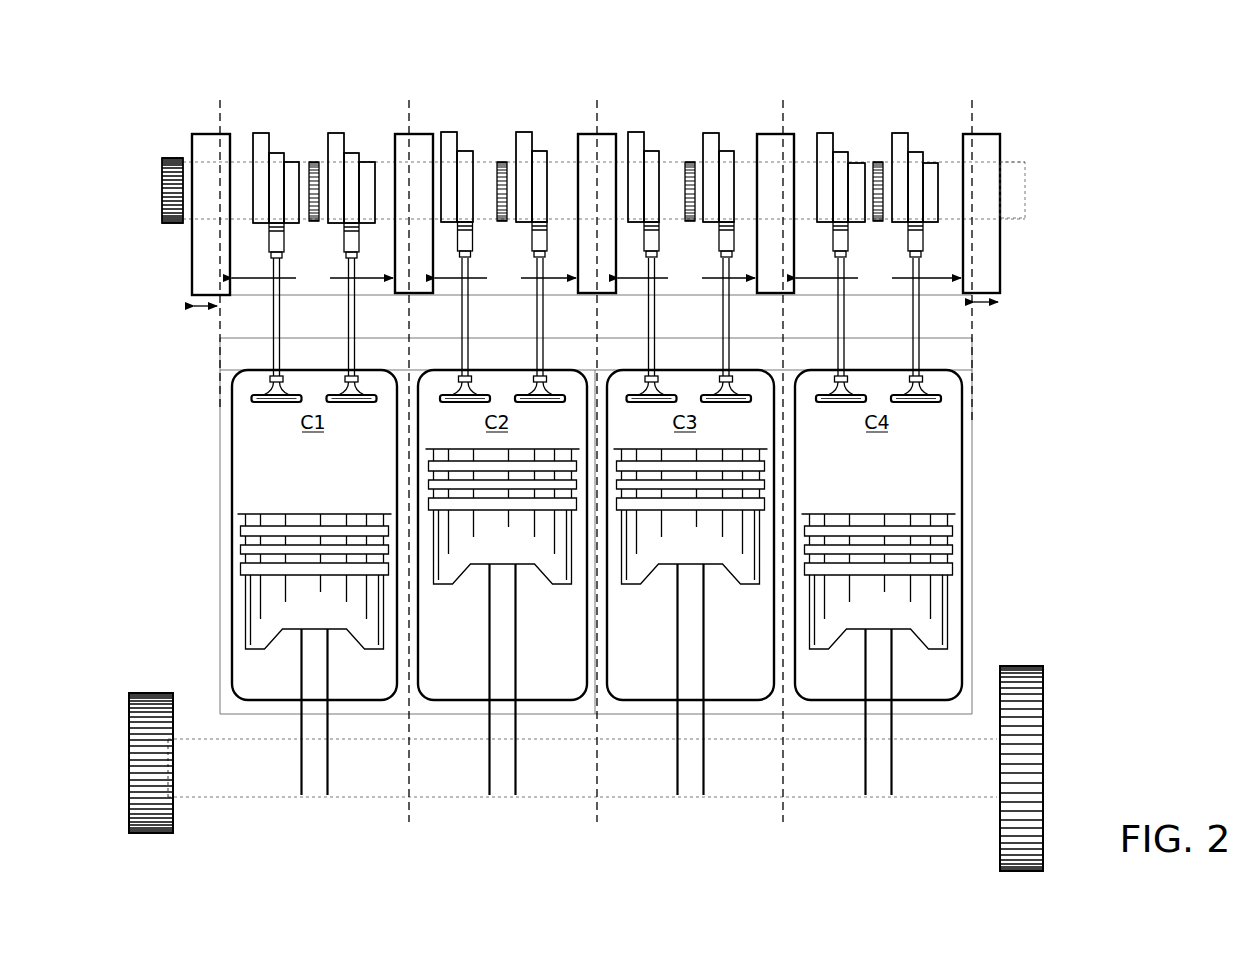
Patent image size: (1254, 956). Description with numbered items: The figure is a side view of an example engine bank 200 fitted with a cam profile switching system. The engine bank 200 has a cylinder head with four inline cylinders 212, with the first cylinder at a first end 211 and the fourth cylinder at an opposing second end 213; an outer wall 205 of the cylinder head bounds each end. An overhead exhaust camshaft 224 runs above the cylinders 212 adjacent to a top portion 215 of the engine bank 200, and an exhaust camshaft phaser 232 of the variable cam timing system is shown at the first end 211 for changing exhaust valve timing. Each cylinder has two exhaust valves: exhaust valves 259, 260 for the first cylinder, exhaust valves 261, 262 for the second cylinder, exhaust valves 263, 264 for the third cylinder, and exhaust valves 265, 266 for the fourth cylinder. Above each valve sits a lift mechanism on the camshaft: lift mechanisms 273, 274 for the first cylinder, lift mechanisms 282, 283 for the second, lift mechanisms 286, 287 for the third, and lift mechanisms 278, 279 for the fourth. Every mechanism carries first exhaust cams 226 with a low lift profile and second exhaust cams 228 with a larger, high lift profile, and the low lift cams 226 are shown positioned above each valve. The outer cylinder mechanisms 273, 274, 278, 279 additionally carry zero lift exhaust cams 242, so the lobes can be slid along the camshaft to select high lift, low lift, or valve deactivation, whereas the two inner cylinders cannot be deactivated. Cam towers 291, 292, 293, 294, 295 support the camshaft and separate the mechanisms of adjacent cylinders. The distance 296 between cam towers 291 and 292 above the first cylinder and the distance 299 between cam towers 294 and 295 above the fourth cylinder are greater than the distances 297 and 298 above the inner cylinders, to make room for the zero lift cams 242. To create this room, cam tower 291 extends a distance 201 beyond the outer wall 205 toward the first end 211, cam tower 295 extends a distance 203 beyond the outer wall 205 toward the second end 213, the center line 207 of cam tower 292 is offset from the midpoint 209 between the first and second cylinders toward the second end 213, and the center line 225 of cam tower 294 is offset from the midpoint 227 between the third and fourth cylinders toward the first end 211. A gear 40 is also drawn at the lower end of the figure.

The engine bank 200 is at (1085, 170).
The distance 201 is at (217, 310).
The distance 203 is at (983, 310).
The outer wall 205 is at (219, 350).
The center line 207 is at (417, 202).
The midpoint 209 is at (408, 803).
The first end 211 is at (142, 252).
The cylinders 212 is at (235, 458).
The second end 213 is at (1027, 243).
The top portion 215 is at (577, 75).
The exhaust camshaft 224 is at (1015, 160).
The center line 225 is at (777, 192).
The first exhaust cams 226 is at (916, 167).
The midpoint 227 is at (783, 807).
The second exhaust cams 228 is at (903, 140).
The exhaust camshaft phaser 232 is at (170, 156).
The zero lift exhaust cams 242 is at (929, 180).
The exhaust valve 259 is at (273, 302).
The exhaust valve 260 is at (348, 302).
The exhaust valve 261 is at (461, 302).
The exhaust valve 262 is at (536, 302).
The exhaust valve 263 is at (648, 302).
The exhaust valve 264 is at (722, 302).
The exhaust valve 265 is at (837, 302).
The exhaust valve 266 is at (912, 302).
The lift mechanism 273 is at (276, 195).
The lift mechanism 274 is at (351, 195).
The lift mechanism 278 is at (841, 195).
The lift mechanism 279 is at (915, 195).
The lift mechanism 282 is at (457, 194).
The lift mechanism 283 is at (531, 194).
The lift mechanism 286 is at (643, 194).
The lift mechanism 287 is at (718, 195).
The cam tower 291 is at (212, 135).
The cam tower 292 is at (423, 132).
The cam tower 293 is at (613, 132).
The cam tower 294 is at (777, 193).
The cam tower 295 is at (1002, 136).
The distance 296 is at (312, 278).
The distance 297 is at (505, 278).
The distance 298 is at (686, 278).
The distance 299 is at (878, 278).
The crankshaft gear 40 is at (958, 792).